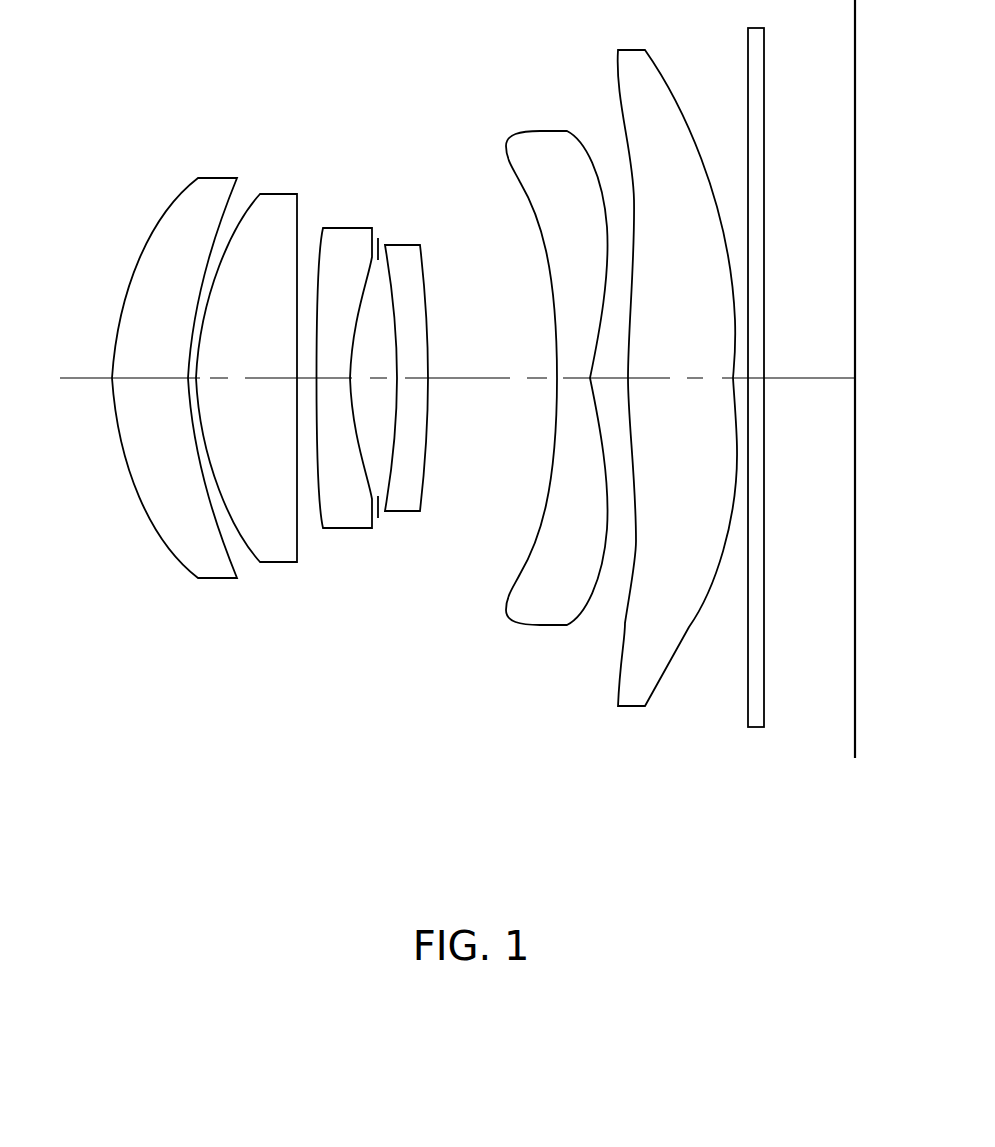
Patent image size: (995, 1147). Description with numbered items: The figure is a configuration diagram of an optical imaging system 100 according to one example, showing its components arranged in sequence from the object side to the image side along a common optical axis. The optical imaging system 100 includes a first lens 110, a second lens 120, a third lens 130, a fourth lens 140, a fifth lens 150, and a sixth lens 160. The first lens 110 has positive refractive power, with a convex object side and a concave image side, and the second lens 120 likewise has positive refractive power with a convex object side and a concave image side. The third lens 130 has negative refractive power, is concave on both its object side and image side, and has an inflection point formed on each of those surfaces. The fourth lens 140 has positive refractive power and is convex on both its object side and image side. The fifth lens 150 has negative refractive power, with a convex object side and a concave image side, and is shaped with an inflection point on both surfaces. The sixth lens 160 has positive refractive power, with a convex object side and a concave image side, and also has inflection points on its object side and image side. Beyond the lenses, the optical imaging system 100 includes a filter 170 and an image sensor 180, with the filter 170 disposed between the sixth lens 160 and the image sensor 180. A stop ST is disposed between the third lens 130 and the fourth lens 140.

The optical imaging system 100 is at (396, 115).
The first lens 110 is at (218, 578).
The second lens 120 is at (275, 562).
The third lens 130 is at (345, 528).
The fourth lens 140 is at (400, 511).
The fifth lens 150 is at (552, 625).
The sixth lens 160 is at (630, 706).
The filter 170 is at (753, 727).
The image sensor 180 is at (855, 732).
The stop ST is at (378, 238).